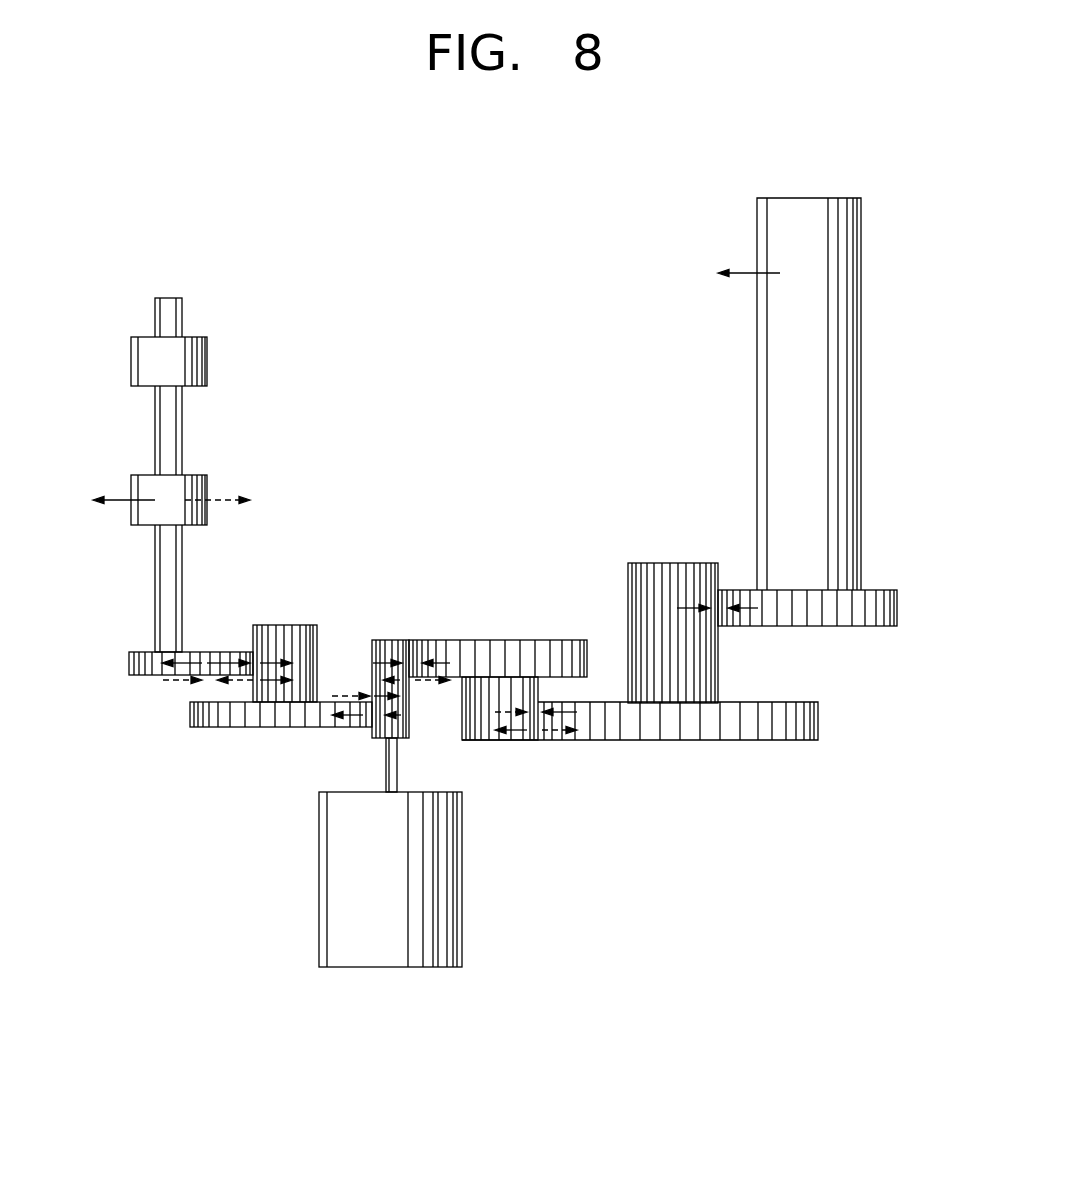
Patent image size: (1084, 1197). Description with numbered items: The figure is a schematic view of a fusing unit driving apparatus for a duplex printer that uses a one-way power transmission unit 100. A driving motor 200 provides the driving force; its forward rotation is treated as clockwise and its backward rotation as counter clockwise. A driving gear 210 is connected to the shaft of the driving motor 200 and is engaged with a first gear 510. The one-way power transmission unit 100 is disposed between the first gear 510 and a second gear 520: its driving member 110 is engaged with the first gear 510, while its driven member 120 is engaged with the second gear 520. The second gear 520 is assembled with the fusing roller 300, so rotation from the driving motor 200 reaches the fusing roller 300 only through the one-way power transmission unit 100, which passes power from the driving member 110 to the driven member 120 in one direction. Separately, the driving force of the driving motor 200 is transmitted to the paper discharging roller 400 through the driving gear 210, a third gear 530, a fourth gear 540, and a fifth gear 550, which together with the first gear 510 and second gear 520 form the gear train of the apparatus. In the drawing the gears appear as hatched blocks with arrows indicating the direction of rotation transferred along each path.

The one-way power transmission unit 100 is at (641, 752).
The driving member 110 is at (780, 735).
The driven member 120 is at (668, 573).
The driving motor 200 is at (380, 972).
The driving gear 210 is at (387, 648).
The fusing roller 300 is at (850, 400).
The paper discharging roller 400 is at (137, 360).
The first gear 510 is at (510, 647).
The second gear 520 is at (898, 612).
The third gear 530 is at (222, 727).
The fourth gear 540 is at (228, 660).
The fifth gear 550 is at (130, 662).